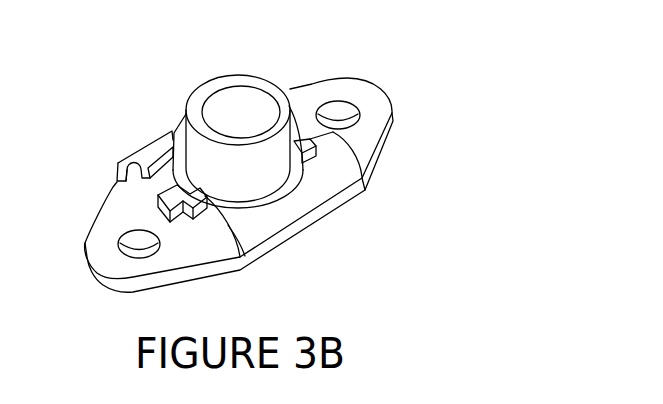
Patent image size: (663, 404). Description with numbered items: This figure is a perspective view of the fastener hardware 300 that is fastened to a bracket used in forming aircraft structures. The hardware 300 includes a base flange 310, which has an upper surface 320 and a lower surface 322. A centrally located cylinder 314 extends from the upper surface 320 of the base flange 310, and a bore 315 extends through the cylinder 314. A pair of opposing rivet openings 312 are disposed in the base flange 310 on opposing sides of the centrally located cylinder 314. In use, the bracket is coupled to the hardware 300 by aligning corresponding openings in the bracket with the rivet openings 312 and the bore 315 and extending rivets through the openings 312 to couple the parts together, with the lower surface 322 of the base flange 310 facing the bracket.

The hardware 300 is at (130, 137).
The base flange 310 is at (328, 91).
The rivet openings 312 is at (120, 242).
The centrally located cylinder 314 is at (270, 92).
The bore 315 is at (219, 106).
The upper surface 320 is at (377, 107).
The lower surface 322 is at (360, 153).